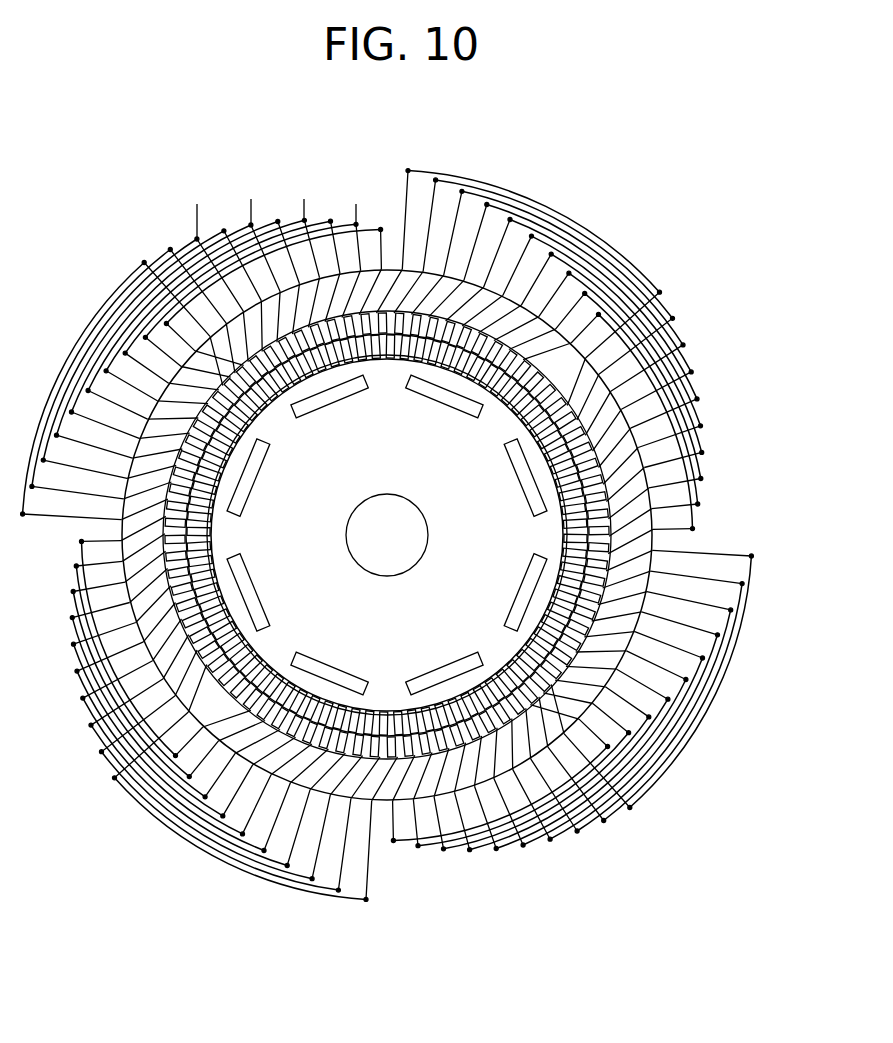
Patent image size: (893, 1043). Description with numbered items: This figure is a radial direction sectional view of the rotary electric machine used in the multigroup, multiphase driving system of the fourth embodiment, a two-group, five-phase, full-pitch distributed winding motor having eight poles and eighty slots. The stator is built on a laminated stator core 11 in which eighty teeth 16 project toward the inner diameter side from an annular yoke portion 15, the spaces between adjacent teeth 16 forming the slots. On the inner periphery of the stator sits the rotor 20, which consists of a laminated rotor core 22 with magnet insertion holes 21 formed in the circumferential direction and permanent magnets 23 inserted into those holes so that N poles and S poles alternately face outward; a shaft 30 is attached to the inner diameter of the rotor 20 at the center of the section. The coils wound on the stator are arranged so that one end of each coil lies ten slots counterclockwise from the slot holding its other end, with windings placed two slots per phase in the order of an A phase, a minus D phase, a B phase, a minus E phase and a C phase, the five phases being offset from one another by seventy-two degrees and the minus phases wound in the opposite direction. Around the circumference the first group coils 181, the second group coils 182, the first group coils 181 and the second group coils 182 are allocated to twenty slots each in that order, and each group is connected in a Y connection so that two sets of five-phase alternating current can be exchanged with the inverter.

The stator core 11 is at (800, 560).
The annular yoke portion 15 is at (397, 546).
The teeth 16 is at (610, 548).
The rotor 20 is at (742, 768).
The magnet insertion holes 21 is at (490, 763).
The rotor core 22 is at (475, 737).
The permanent magnets 23 is at (445, 669).
The shaft 30 is at (628, 630).
The first group coils 181 is at (572, 218).
The second group coils 182 is at (75, 380).